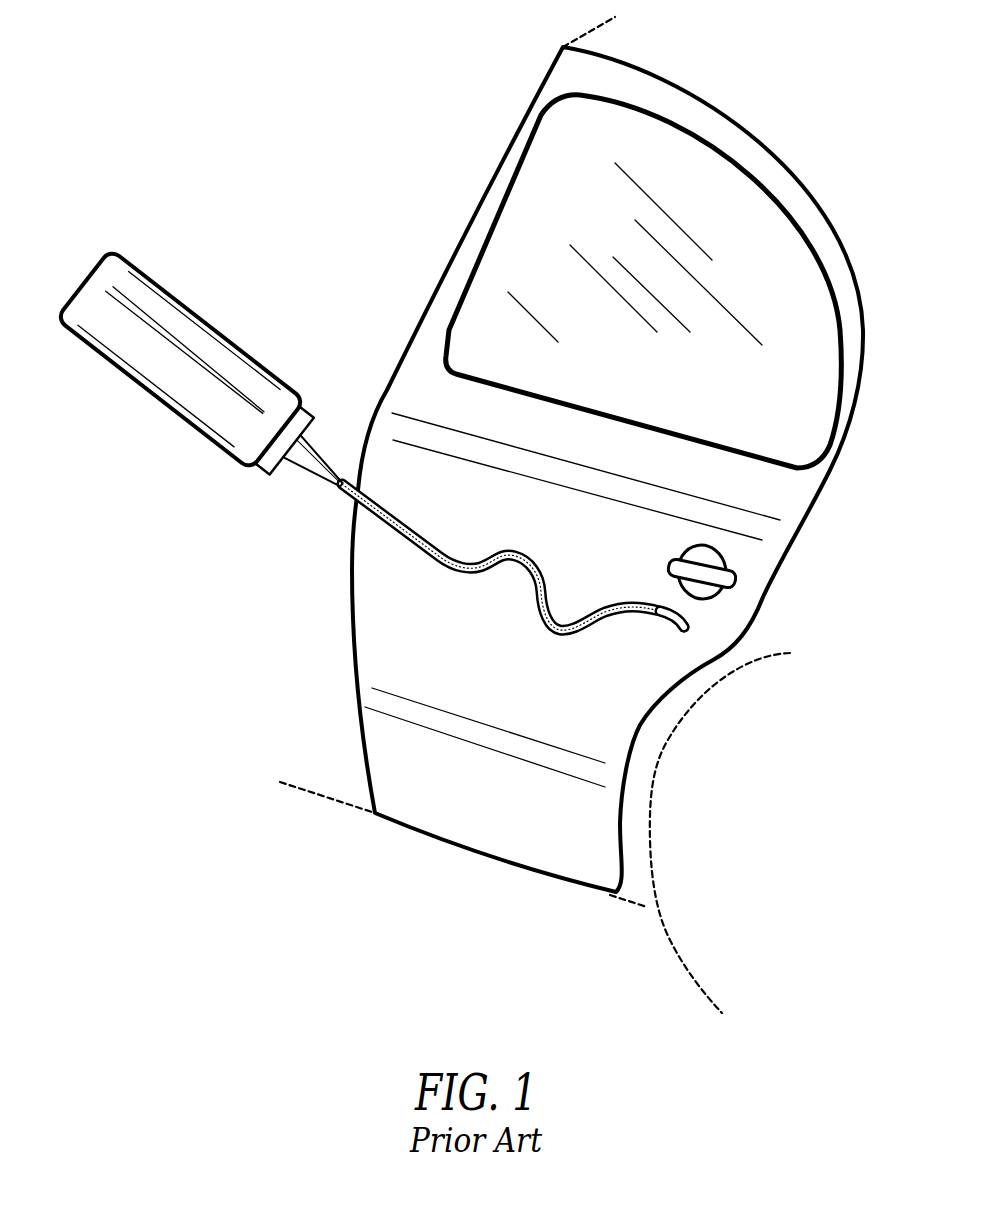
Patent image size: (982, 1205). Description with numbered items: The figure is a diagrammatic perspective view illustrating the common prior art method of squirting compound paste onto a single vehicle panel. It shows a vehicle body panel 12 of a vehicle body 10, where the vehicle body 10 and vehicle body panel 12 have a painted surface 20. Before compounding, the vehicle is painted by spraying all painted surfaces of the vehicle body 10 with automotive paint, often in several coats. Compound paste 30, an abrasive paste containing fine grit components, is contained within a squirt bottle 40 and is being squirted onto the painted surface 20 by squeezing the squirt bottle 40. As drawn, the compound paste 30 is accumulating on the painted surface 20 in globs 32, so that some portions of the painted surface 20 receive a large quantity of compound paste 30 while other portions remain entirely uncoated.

The vehicle body 10 is at (335, 802).
The vehicle body panel 12 is at (350, 638).
The painted surface 20 is at (780, 502).
The compound paste 30 is at (397, 532).
The globs 32 is at (690, 626).
The squirt bottle 40 is at (202, 313).